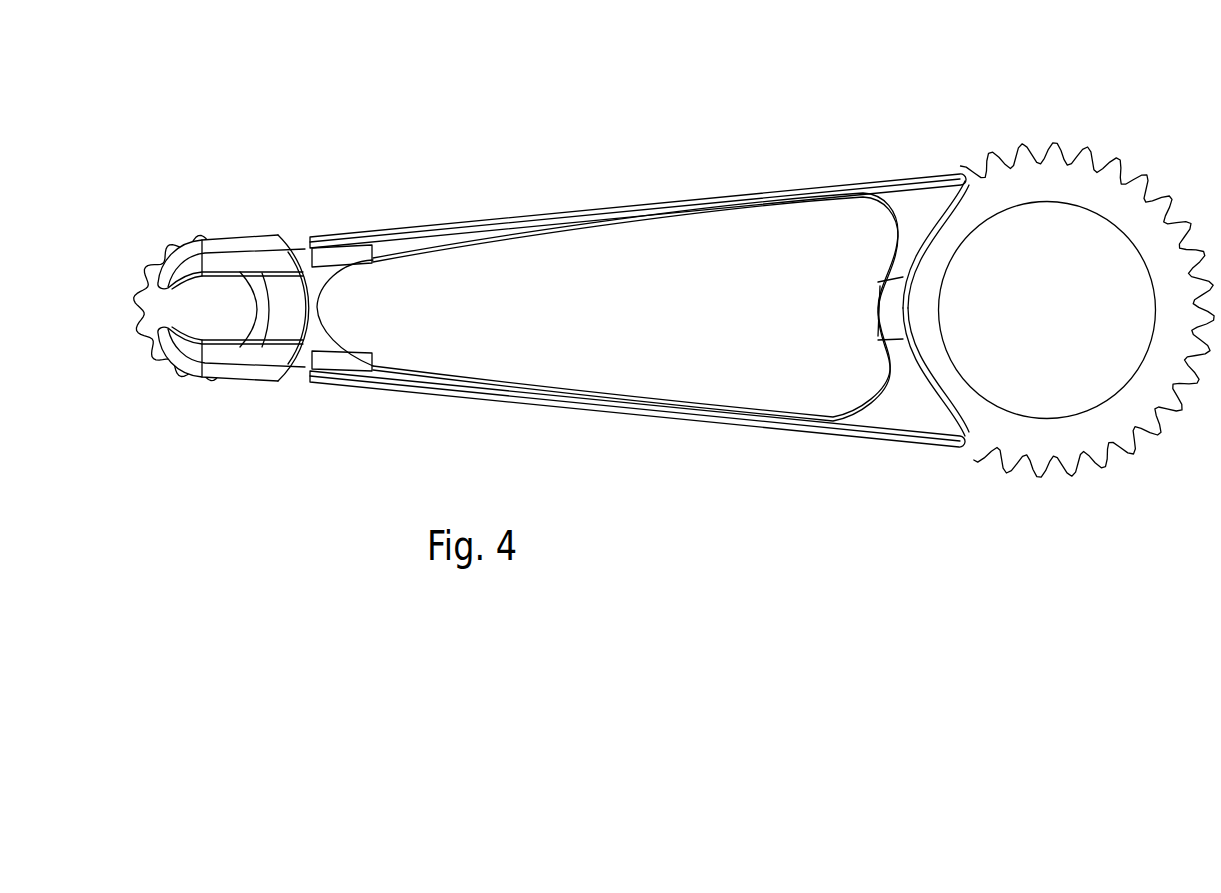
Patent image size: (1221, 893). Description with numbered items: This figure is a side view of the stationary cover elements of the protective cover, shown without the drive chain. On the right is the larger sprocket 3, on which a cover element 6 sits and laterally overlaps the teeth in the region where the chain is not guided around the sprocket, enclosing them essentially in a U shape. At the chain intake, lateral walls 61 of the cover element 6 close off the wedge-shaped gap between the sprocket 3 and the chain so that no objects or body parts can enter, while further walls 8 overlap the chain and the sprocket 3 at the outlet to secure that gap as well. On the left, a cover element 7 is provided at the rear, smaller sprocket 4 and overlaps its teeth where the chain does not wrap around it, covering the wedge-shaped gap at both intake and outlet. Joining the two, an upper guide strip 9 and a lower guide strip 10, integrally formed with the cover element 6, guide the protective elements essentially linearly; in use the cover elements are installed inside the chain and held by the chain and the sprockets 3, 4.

The larger sprocket 3 is at (1033, 180).
The smaller sprocket 4 is at (157, 303).
The cover element 6 is at (893, 293).
The cover element 7 is at (278, 300).
The walls 8 is at (920, 417).
The upper guide strip 9 is at (807, 187).
The lower guide strip 10 is at (773, 425).
The lateral walls 61 is at (918, 203).